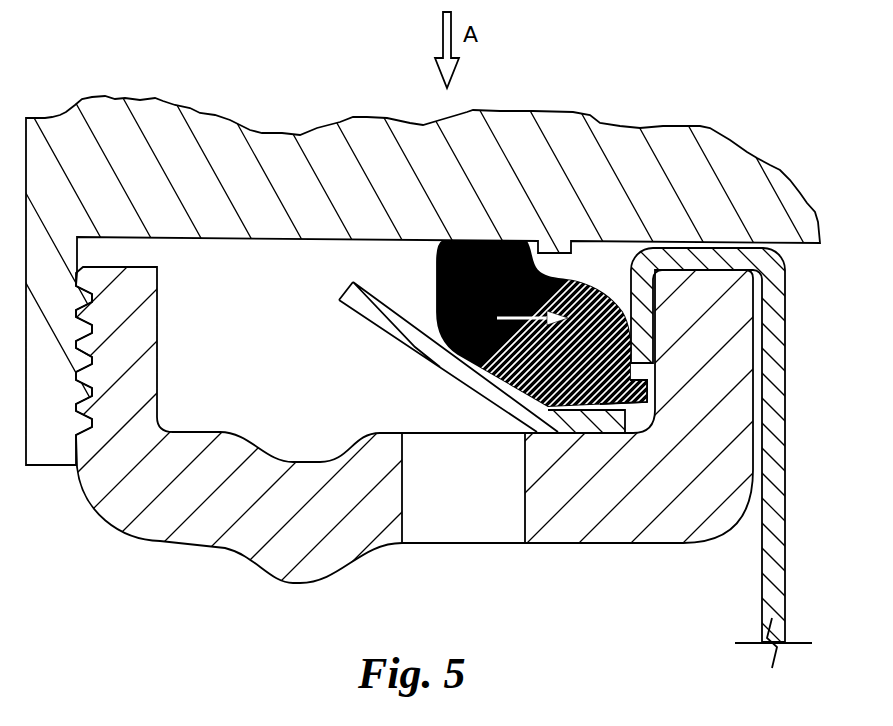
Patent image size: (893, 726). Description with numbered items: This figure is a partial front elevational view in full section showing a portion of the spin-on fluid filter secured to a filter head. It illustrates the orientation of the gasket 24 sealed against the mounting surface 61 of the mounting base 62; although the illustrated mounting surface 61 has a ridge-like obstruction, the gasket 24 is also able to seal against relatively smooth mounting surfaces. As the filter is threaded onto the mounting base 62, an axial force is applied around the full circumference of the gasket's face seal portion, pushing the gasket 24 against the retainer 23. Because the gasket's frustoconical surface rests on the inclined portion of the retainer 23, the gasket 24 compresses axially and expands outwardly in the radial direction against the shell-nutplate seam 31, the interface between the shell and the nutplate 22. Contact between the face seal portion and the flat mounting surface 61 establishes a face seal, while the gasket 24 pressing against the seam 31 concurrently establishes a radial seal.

The mounting base 62 is at (233, 143).
The mounting surface 61 is at (504, 240).
The shell-nutplate seam interface 31 is at (656, 334).
The gasket 24 is at (650, 399).
The retainer 23 is at (513, 405).
The nutplate 22 is at (663, 498).